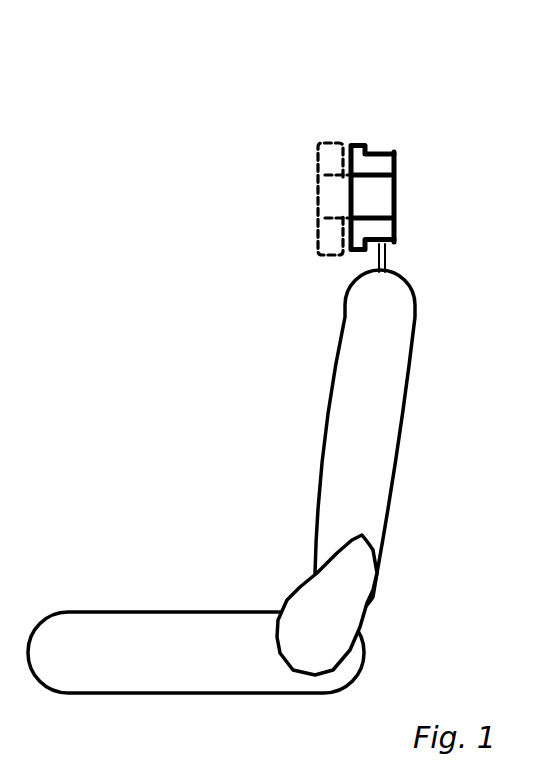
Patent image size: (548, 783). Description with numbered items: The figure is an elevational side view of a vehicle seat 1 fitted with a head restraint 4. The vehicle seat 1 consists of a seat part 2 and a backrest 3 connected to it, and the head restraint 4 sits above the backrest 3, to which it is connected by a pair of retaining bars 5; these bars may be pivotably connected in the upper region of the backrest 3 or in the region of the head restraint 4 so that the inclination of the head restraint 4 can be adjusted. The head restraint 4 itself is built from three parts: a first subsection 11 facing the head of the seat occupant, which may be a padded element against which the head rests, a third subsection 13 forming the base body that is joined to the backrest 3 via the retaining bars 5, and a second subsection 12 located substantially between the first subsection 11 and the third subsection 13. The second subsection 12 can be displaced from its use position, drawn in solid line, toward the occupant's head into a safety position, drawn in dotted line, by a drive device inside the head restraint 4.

The vehicle seat 1 is at (167, 369).
The seat part 2 is at (135, 642).
The backrest 3 is at (378, 382).
The head restraint 4 is at (285, 143).
The retaining bars 5 is at (385, 260).
The first subsection 11 is at (363, 140).
The second subsection 12 is at (375, 188).
The third subsection 13 is at (395, 218).